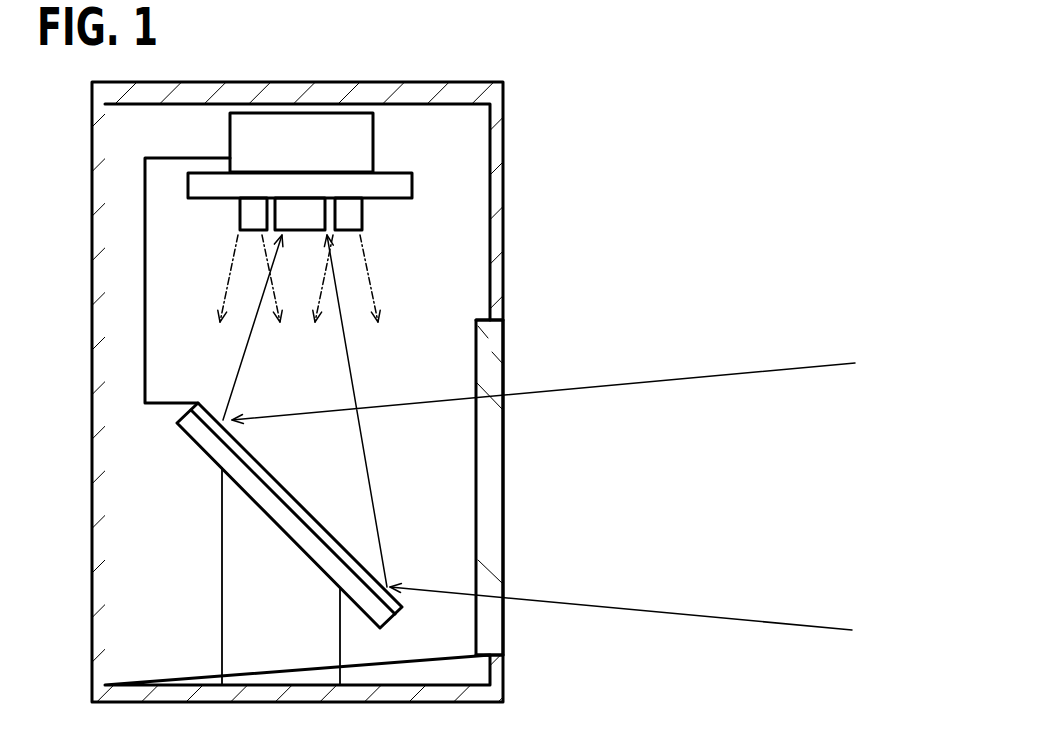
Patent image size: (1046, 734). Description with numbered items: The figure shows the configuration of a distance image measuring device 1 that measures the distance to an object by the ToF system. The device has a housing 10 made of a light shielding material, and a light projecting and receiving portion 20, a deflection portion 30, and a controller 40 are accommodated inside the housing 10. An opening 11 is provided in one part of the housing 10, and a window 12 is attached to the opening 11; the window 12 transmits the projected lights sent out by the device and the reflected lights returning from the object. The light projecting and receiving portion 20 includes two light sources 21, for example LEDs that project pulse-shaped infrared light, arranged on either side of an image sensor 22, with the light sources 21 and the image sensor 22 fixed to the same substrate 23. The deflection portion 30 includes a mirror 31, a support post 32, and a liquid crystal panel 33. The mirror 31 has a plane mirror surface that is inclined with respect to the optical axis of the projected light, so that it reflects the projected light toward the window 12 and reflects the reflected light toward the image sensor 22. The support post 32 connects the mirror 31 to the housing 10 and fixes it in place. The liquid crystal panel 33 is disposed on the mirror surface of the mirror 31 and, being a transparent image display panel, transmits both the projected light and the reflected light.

The distance image measuring device 1 is at (572, 62).
The housing 10 is at (515, 173).
The opening 11 is at (497, 334).
The window 12 is at (505, 366).
The light projecting and receiving portion 20 is at (452, 218).
The light source 21 is at (240, 223).
The image sensor 22 is at (300, 232).
The substrate 23 is at (380, 172).
The deflection portion 30 is at (150, 522).
The mirror 31 is at (208, 457).
The support post 32 is at (222, 580).
The liquid crystal panel 33 is at (212, 413).
The controller 40 is at (230, 132).